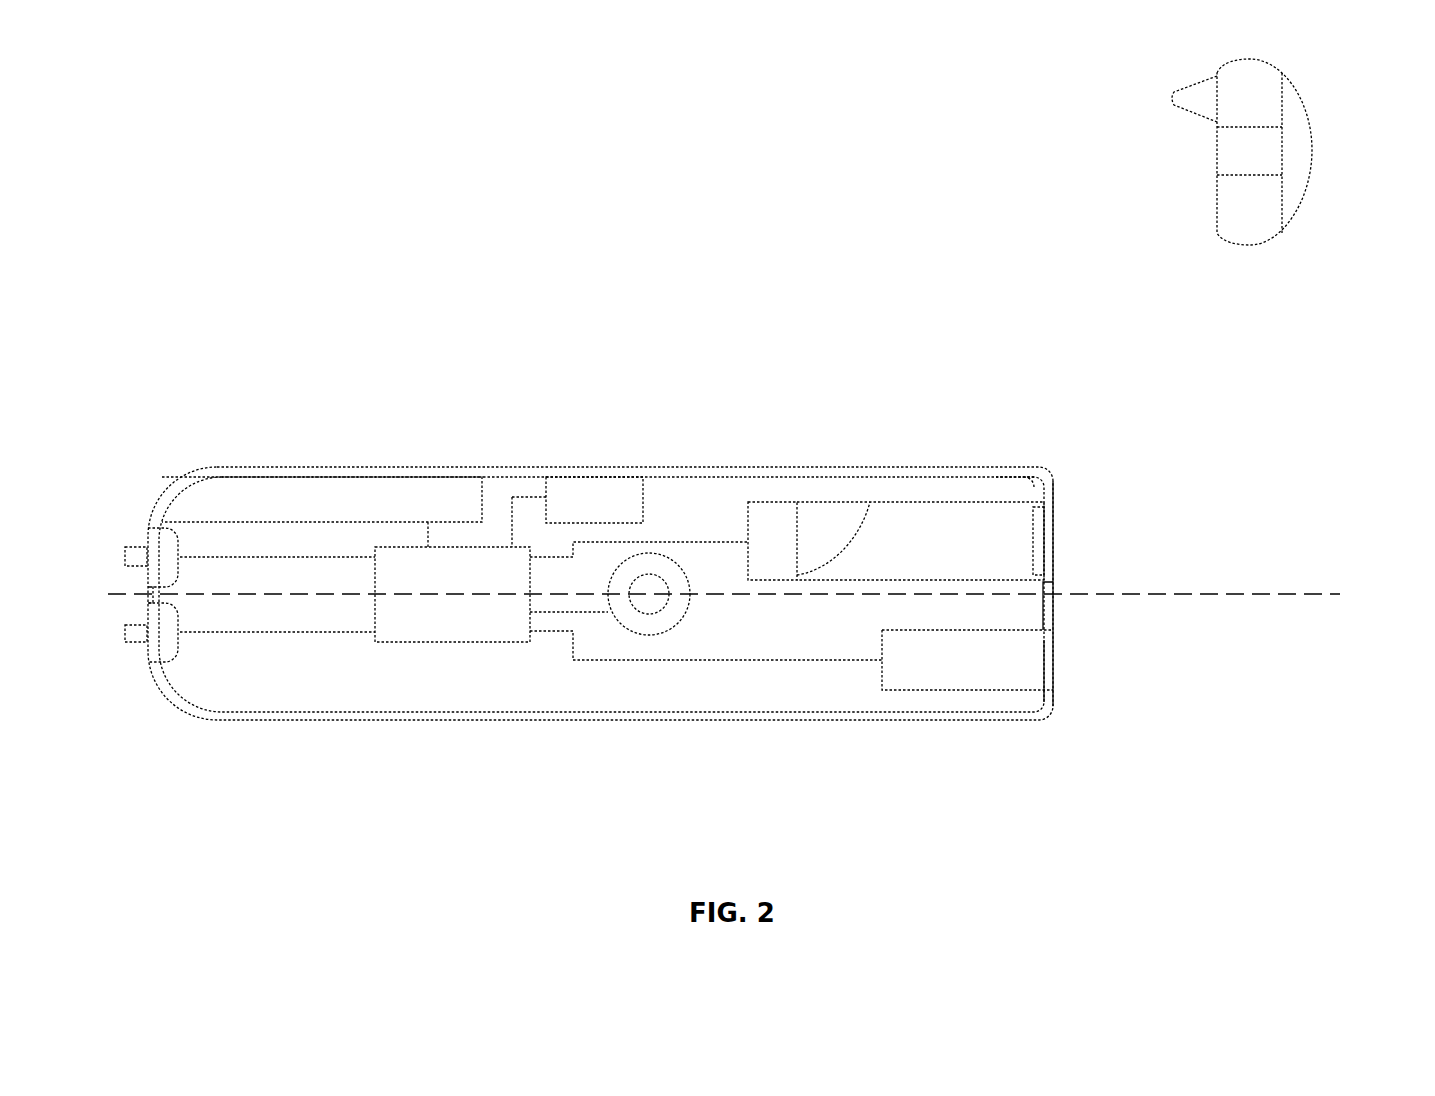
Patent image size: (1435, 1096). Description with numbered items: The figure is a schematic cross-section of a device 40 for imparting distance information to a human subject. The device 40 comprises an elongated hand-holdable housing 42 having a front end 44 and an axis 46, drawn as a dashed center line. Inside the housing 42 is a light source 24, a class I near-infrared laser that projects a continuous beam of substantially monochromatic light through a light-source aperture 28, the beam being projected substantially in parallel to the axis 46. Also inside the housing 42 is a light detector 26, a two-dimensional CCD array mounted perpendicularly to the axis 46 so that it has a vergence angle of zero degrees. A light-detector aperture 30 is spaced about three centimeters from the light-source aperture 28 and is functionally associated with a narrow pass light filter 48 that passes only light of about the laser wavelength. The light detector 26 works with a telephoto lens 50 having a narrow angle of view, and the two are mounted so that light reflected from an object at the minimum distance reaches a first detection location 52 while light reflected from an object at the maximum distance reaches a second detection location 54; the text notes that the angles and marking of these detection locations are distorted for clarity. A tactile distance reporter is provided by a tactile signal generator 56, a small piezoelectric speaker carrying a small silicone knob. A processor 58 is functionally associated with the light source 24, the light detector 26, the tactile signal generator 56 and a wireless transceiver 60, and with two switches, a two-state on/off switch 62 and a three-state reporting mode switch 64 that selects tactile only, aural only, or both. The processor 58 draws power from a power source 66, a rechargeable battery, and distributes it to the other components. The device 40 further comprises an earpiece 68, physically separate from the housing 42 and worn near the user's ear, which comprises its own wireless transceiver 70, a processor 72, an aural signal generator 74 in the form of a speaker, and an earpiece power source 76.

The light source 24 is at (977, 690).
The light detector 26 is at (773, 522).
The light-source aperture 28 is at (1055, 668).
The light-detector aperture 30 is at (1053, 545).
The device 40 is at (253, 222).
The housing 42 is at (257, 467).
The front end 44 is at (1055, 603).
The axis 46 is at (1243, 592).
The narrow pass light filter 48 is at (1053, 482).
The telephoto lens 50 is at (998, 500).
The first detection location 52 is at (797, 520).
The second detection location 54 is at (798, 573).
The tactile signal generator 56 is at (652, 636).
The processor 58 is at (450, 627).
The wireless transceiver 60 is at (593, 498).
The on/off switch 62 is at (137, 548).
The reporting mode switch 64 is at (137, 643).
The power source 66 is at (322, 512).
The earpiece 68 is at (1112, 117).
The wireless transceiver 70 is at (1253, 237).
The processor 72 is at (1223, 150).
The aural signal generator 74 is at (1263, 97).
The earpiece power source 76 is at (1297, 182).